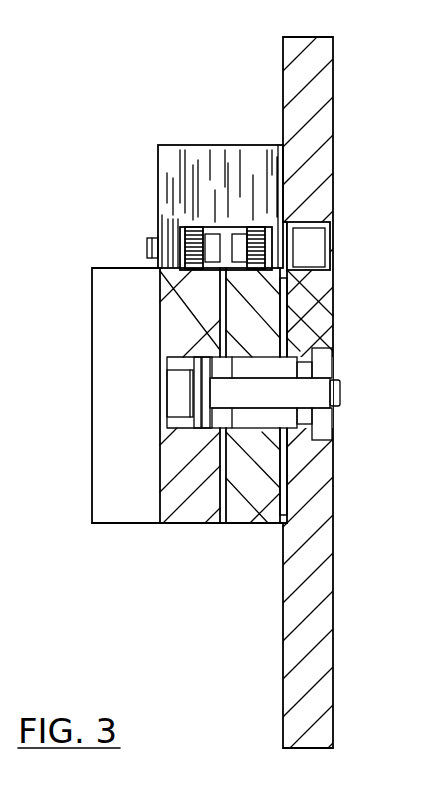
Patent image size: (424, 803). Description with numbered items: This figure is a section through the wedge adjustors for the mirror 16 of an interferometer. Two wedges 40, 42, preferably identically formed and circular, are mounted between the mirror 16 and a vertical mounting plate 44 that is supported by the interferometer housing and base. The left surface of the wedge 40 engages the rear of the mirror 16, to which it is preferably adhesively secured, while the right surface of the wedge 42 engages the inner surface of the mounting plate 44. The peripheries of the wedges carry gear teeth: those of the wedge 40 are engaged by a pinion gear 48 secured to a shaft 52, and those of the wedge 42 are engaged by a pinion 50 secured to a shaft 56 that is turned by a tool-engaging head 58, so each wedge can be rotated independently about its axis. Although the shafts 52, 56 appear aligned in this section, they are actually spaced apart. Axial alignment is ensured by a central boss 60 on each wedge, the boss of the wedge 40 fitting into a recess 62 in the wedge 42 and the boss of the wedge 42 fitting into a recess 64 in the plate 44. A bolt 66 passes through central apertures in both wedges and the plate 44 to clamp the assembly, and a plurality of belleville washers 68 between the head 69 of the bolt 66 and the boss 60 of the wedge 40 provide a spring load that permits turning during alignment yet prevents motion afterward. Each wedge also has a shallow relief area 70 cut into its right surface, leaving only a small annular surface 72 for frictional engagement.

The mirror 16 is at (85, 475).
The wedge 40 is at (202, 512).
The wedge 42 is at (255, 512).
The vertical mounting plate 44 is at (305, 524).
The pinion gear 48 is at (185, 238).
The pinion 50 is at (287, 247).
The shaft 52 is at (207, 230).
The shaft 56 is at (243, 228).
The tool-engaging head 58 is at (313, 258).
The boss 60 is at (224, 370).
The recess 62 is at (253, 418).
The recess 64 is at (297, 366).
The bolt 66 is at (285, 396).
The belleville washers 68 is at (205, 357).
The head 69 is at (182, 393).
The relief area 70 is at (290, 300).
The annular surface 72 is at (290, 279).